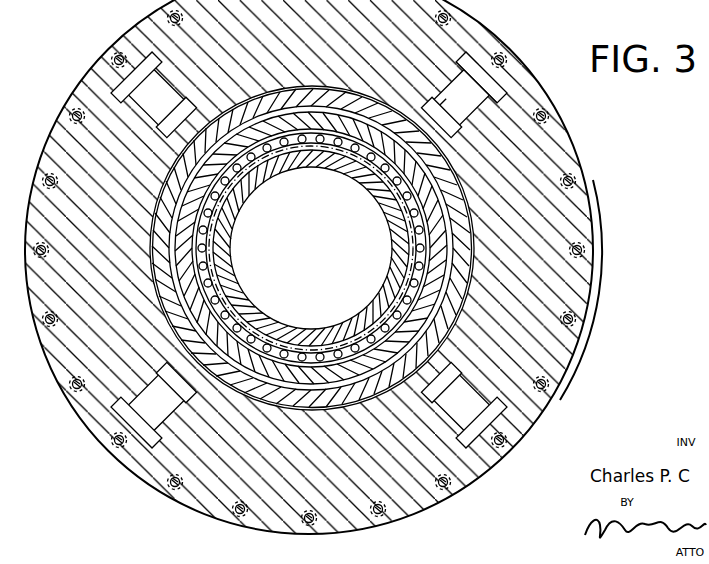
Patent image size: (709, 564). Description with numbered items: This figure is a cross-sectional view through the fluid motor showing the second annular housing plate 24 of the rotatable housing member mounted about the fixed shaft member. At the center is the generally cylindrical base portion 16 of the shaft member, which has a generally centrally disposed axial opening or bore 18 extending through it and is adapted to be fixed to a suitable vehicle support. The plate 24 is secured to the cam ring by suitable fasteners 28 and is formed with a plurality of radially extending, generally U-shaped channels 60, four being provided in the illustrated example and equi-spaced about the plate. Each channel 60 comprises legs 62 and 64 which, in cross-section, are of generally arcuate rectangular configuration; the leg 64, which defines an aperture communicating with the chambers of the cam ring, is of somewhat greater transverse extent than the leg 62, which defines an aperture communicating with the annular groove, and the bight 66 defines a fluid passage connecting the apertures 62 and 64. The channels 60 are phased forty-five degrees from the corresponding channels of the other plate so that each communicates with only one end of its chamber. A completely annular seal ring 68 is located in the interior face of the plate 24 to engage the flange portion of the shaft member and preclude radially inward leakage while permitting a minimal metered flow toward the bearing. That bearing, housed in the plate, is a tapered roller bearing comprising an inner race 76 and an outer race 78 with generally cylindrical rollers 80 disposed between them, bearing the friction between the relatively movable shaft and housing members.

The base portion 16 is at (323, 166).
The axial opening or bore 18 is at (315, 255).
The second annular housing plate 24 is at (586, 287).
The fasteners 28 is at (588, 232).
The channels 60 is at (334, 253).
The leg 62 is at (453, 127).
The leg 64 is at (500, 88).
The bight 66 is at (455, 87).
The seal rings 68 is at (283, 398).
The inner race 76 is at (236, 212).
The outer race 78 is at (210, 280).
The rollers 80 is at (207, 263).